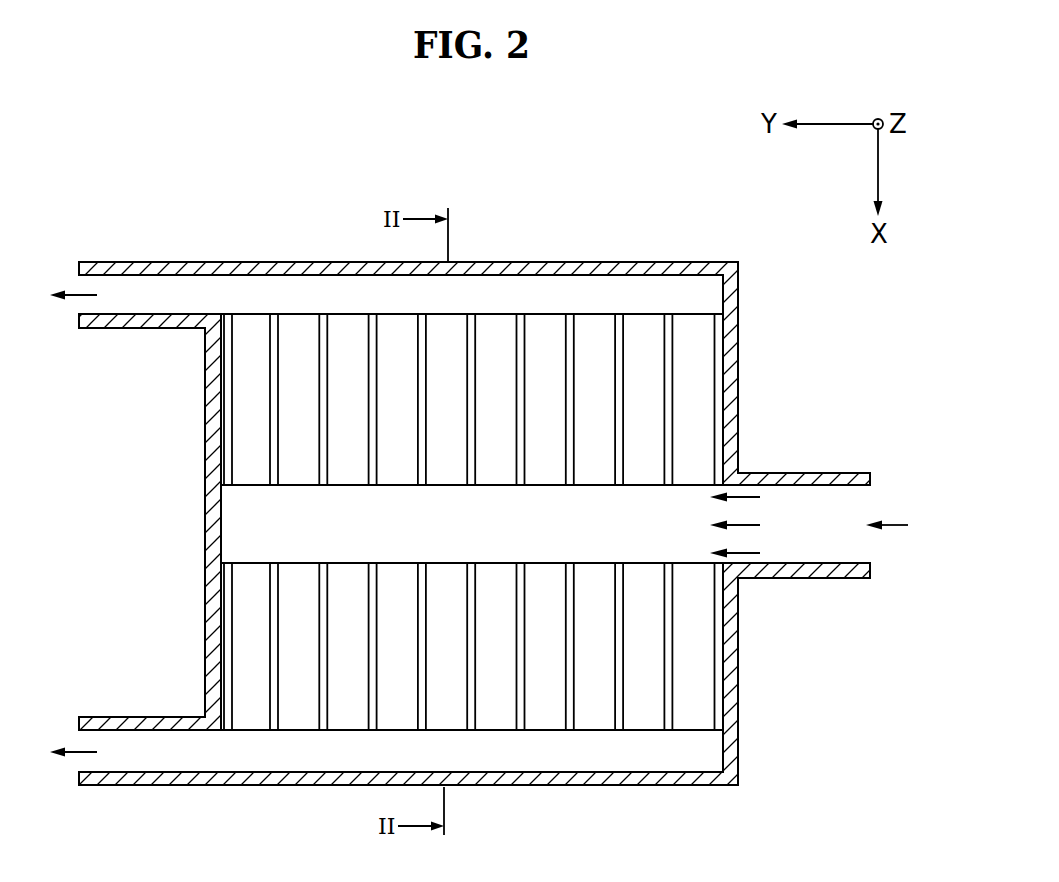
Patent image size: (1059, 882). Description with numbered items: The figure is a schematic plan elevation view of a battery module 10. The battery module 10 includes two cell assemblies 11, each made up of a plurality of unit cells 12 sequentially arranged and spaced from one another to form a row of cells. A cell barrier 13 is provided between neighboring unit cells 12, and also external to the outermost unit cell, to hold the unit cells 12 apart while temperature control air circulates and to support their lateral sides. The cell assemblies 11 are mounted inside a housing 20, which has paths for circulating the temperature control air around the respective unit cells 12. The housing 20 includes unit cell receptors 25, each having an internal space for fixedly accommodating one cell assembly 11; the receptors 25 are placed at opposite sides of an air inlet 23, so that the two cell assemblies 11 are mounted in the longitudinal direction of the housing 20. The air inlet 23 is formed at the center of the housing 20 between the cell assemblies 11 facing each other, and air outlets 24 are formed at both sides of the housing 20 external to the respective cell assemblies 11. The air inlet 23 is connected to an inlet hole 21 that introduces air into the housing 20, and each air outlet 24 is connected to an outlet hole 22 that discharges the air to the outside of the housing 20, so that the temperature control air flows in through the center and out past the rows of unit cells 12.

The battery module 10 is at (825, 296).
The cell assembly 11 is at (362, 220).
The unit cell 12 is at (347, 328).
The cell barrier 13 is at (275, 328).
The housing 20 is at (474, 502).
The inlet hole 21 is at (866, 552).
The outlet hole 22 is at (80, 310).
The air inlet 23 is at (206, 521).
The air outlet 24 is at (591, 297).
The unit cell receptor 25 is at (206, 393).